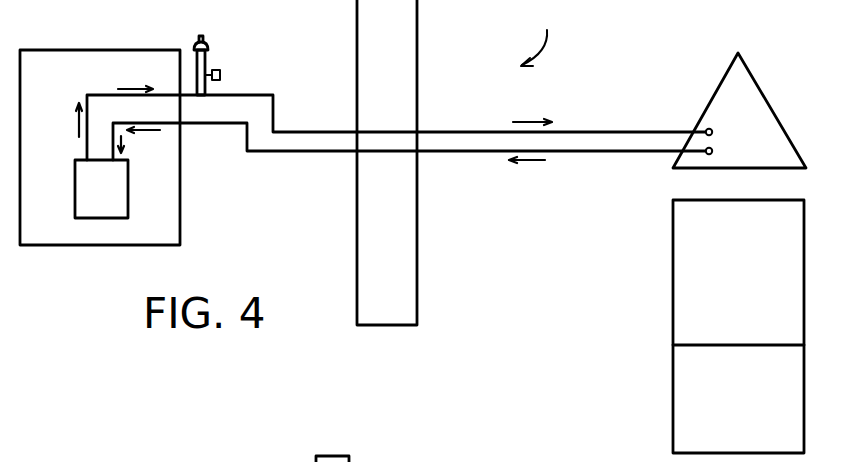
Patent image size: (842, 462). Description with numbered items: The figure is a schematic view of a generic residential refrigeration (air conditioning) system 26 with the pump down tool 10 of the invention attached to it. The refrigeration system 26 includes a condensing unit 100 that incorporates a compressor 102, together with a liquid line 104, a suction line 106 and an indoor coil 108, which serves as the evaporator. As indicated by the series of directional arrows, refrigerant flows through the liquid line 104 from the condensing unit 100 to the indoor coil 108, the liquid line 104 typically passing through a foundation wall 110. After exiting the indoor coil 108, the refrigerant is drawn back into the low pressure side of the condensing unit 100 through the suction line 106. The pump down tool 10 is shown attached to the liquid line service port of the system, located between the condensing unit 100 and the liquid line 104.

The pump down tool 10 is at (208, 65).
The residential refrigeration system 26 is at (540, 34).
The condensing unit 100 is at (93, 232).
The compressor 102 is at (102, 187).
The liquid line 104 is at (298, 130).
The suction line 106 is at (308, 153).
The indoor coil 108 is at (733, 107).
The foundation wall 110 is at (393, 255).